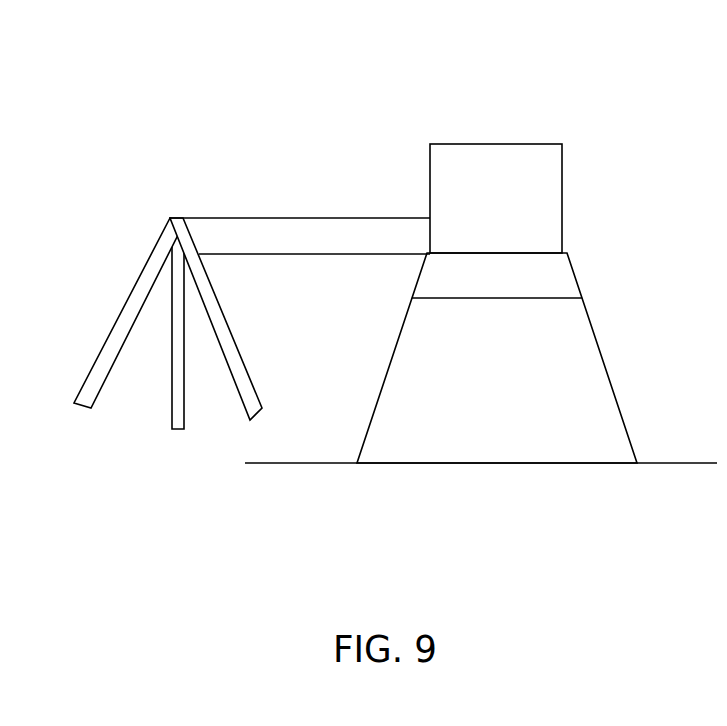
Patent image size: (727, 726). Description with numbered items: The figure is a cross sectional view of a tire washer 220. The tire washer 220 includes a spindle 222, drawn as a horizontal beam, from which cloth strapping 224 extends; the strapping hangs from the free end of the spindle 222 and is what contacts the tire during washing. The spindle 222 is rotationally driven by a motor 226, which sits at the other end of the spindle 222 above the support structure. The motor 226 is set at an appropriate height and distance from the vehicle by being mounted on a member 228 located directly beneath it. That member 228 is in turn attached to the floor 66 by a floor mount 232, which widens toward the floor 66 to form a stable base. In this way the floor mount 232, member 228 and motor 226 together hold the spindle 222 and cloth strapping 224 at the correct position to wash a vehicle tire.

The tire washer 220 is at (370, 82).
The spindle 222 is at (293, 237).
The cloth strapping 224 is at (112, 347).
The motor 226 is at (530, 201).
The member 228 is at (555, 277).
The floor mount 232 is at (578, 386).
The floor 66 is at (673, 464).